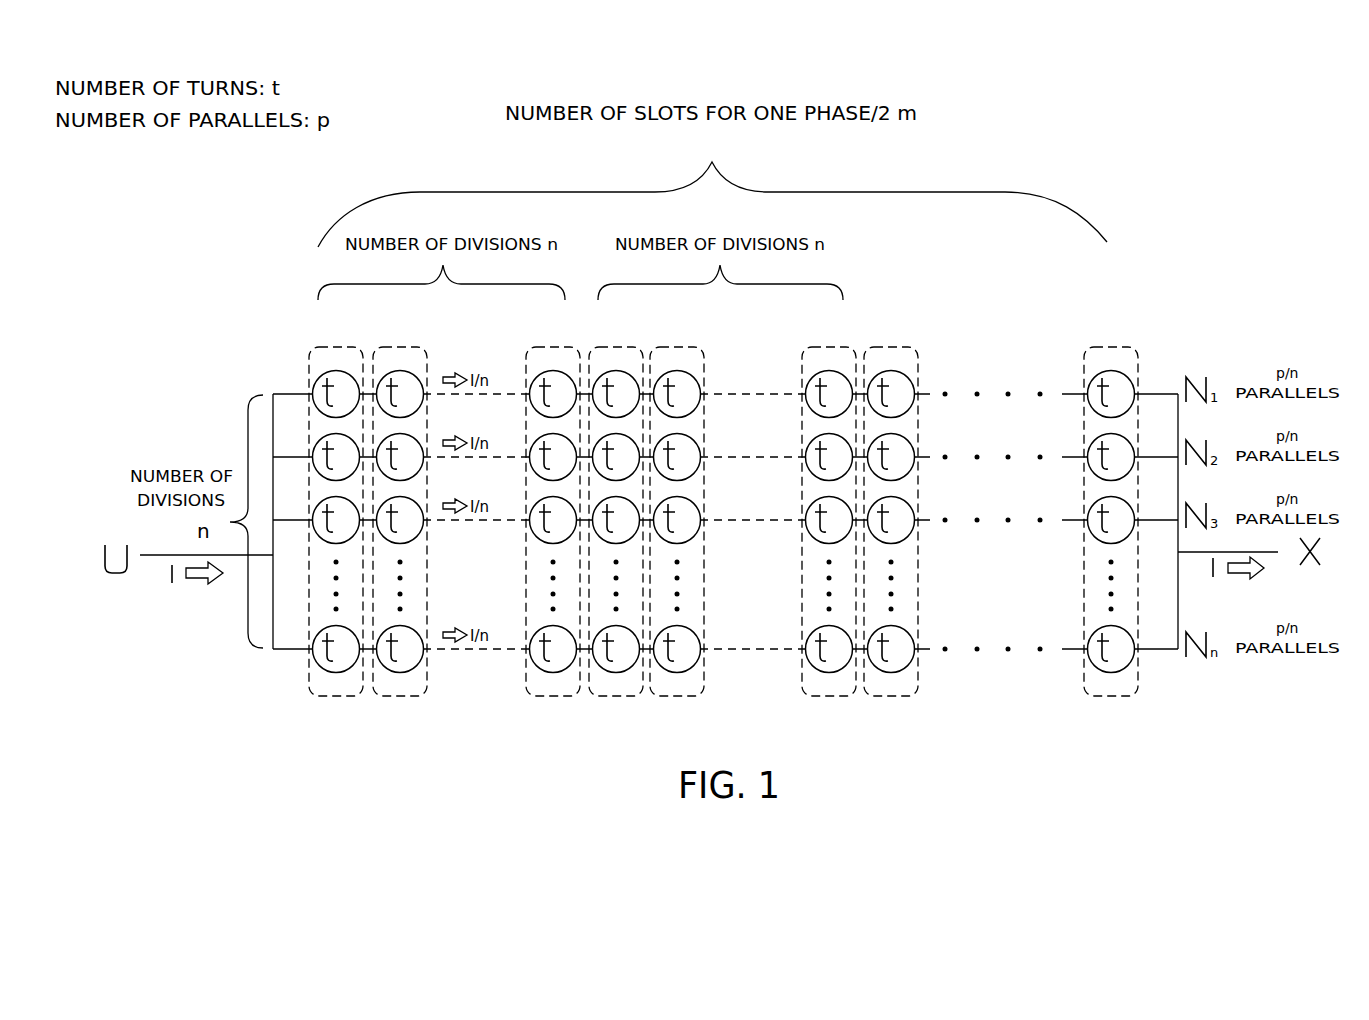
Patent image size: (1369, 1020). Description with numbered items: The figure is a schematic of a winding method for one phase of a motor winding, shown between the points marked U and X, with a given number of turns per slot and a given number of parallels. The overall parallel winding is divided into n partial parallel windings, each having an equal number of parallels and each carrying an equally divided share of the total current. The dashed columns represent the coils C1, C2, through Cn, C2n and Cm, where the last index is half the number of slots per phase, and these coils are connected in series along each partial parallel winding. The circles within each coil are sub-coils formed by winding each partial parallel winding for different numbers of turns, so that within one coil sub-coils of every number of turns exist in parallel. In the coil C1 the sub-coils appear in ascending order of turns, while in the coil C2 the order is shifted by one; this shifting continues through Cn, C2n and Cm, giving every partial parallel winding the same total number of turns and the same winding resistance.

The coil C1 is at (336, 308).
The coil C2 is at (400, 308).
The coil Cn is at (553, 308).
The coil C2n is at (829, 308).
The coil Cm is at (1111, 308).